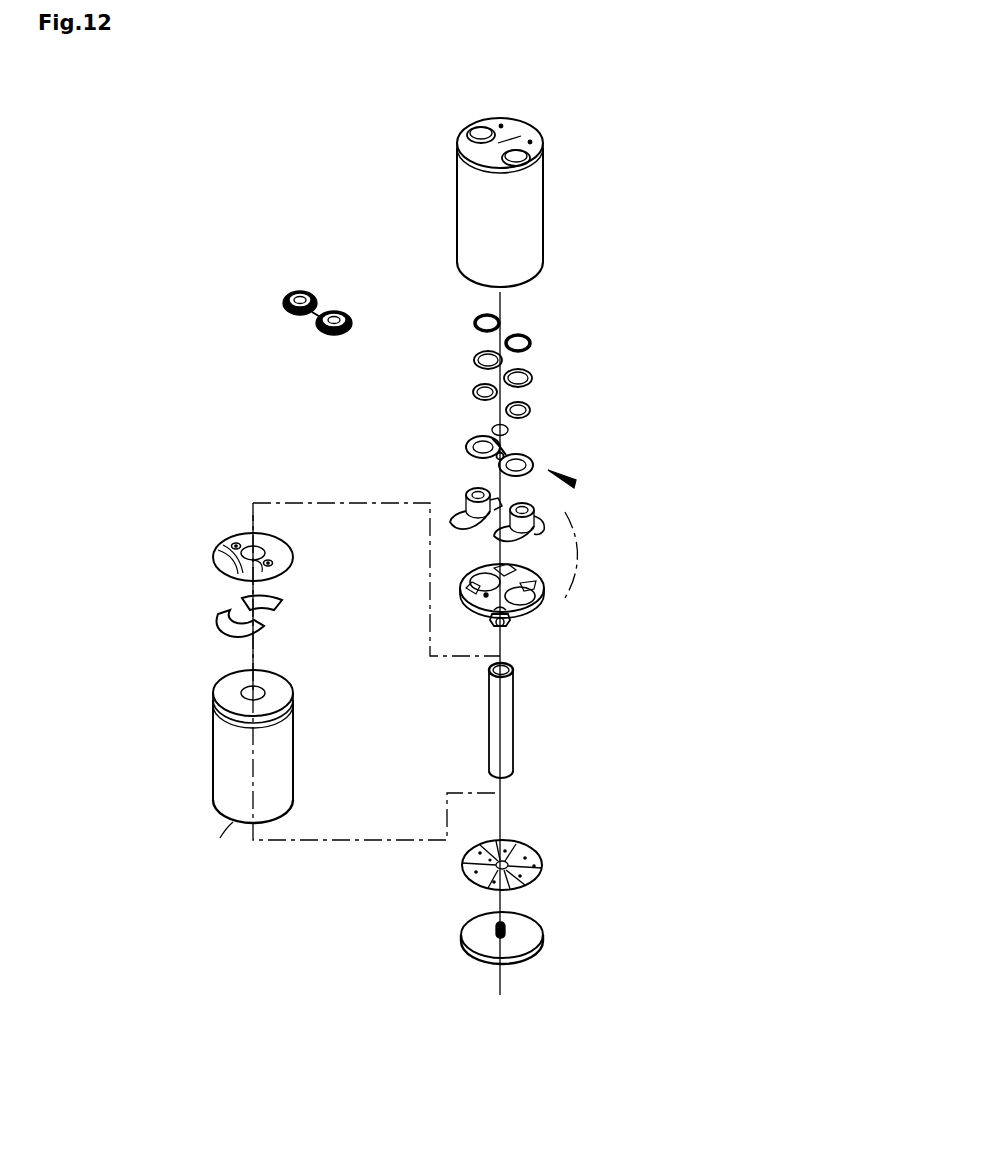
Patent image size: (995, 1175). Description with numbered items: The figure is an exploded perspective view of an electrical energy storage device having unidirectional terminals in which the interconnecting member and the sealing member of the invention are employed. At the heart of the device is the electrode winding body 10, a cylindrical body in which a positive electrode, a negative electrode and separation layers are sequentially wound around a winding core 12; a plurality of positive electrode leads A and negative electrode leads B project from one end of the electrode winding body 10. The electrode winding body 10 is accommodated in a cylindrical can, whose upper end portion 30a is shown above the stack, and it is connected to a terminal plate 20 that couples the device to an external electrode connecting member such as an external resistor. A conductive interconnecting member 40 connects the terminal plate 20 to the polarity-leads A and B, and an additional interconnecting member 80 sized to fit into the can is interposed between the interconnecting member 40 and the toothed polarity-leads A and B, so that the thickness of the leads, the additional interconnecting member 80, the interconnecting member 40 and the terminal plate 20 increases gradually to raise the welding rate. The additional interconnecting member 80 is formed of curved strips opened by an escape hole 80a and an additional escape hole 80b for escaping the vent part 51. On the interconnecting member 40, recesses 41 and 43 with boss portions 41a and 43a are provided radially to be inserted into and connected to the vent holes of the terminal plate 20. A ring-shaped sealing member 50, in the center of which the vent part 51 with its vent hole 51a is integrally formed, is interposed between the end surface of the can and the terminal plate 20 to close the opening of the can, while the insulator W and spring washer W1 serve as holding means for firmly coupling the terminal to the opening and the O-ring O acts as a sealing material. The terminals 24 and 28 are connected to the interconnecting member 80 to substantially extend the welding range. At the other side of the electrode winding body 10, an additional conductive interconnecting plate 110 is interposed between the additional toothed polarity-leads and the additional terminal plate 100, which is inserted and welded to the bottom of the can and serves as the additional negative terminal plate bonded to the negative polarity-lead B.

The housing cover 30a is at (537, 128).
The vent part 51 is at (478, 456).
The terminal 28 is at (458, 492).
The insulator W is at (500, 323).
The spring washer W1 is at (532, 380).
The O-ring O is at (530, 412).
The vent hole 51a is at (520, 445).
The sealing member 50 is at (578, 484).
The terminal 24 is at (538, 500).
The terminal plate 20 is at (575, 589).
The interconnecting member 40 is at (217, 562).
The hole 43a is at (234, 543).
The recess 43 is at (222, 552).
The boss portion 41a is at (273, 563).
The recess 41 is at (276, 576).
The additional interconnecting member 80 is at (236, 623).
The escape hole 80a is at (272, 626).
The additional escape hole 80b is at (237, 604).
The positive electrode leads A is at (228, 685).
The electrode winding body 10 is at (220, 755).
The negative electrode leads B is at (233, 820).
The winding core 12 is at (510, 718).
The additional conductive interconnecting plate 110 is at (530, 862).
The additional terminal plate 100 is at (540, 937).